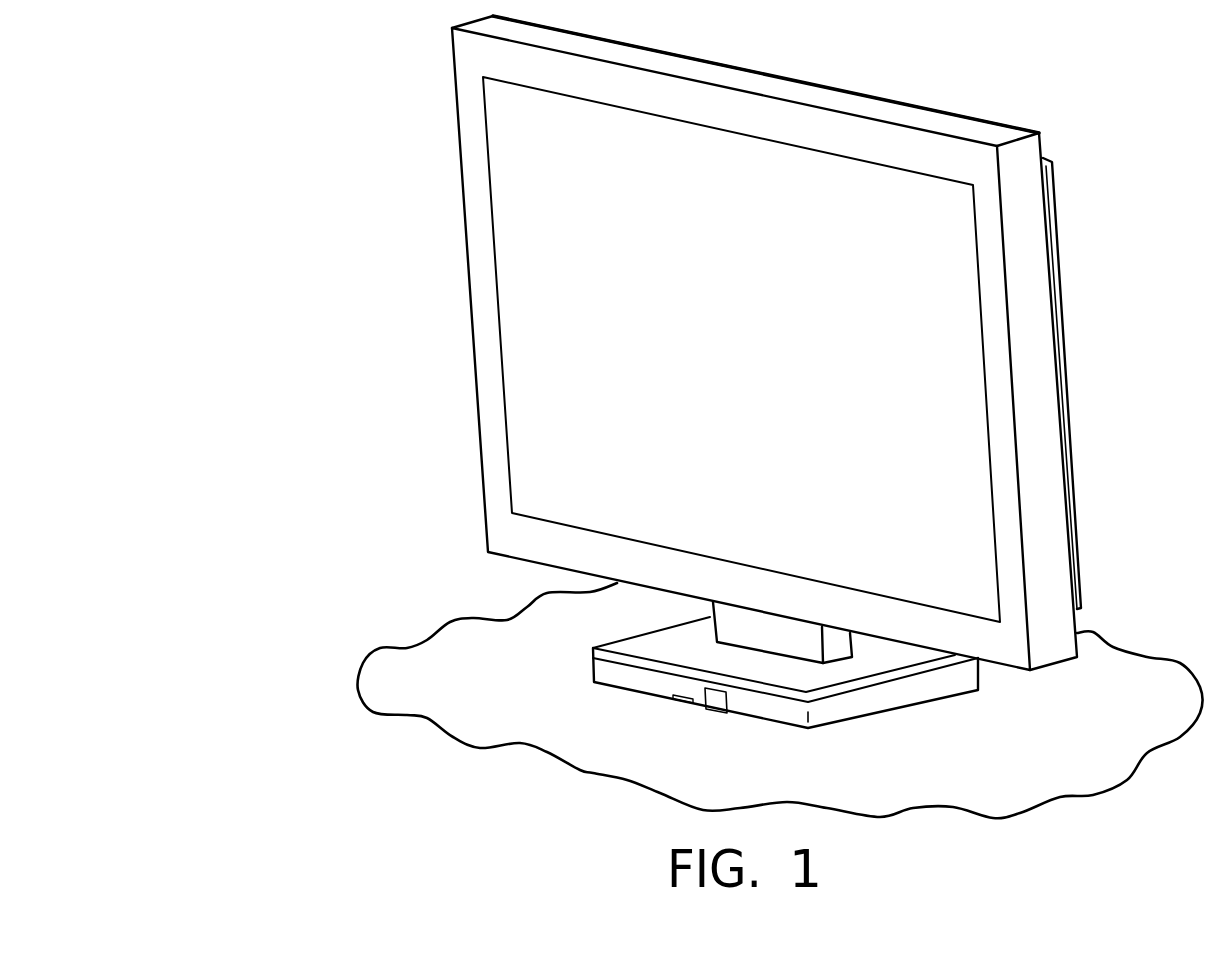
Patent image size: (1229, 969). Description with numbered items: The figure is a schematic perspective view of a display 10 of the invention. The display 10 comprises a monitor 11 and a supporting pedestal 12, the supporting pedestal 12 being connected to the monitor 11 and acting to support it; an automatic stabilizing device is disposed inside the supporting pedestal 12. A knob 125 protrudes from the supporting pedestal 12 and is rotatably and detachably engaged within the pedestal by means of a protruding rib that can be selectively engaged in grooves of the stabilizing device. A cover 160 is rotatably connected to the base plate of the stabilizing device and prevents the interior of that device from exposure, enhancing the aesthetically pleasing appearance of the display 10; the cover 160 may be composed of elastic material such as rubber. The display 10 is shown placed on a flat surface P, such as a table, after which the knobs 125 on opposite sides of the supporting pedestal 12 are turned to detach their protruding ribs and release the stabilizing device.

The display 10 is at (216, 58).
The monitor 11 is at (1037, 363).
The supporting pedestal 12 is at (900, 697).
The knob 125 is at (673, 702).
The cover 160 is at (715, 703).
The flat surface P is at (452, 640).